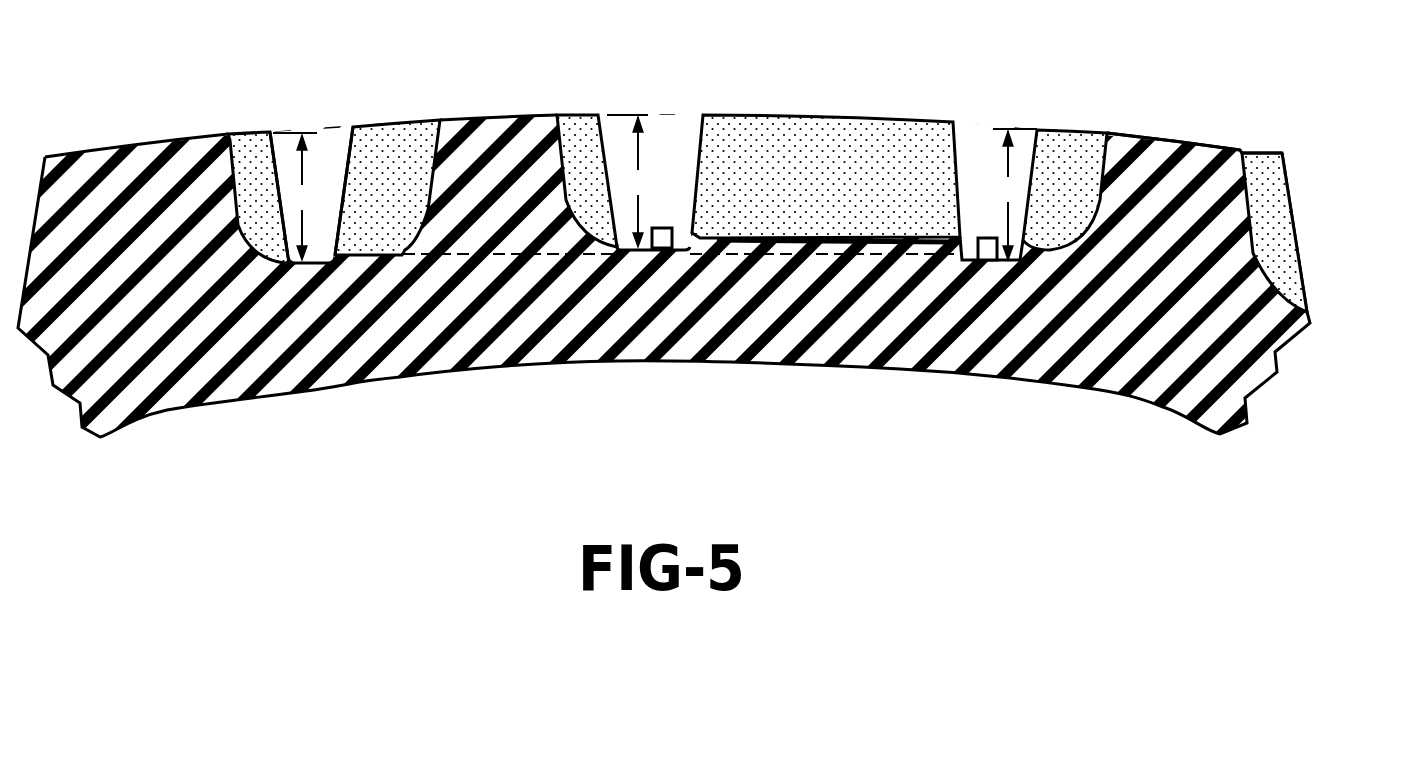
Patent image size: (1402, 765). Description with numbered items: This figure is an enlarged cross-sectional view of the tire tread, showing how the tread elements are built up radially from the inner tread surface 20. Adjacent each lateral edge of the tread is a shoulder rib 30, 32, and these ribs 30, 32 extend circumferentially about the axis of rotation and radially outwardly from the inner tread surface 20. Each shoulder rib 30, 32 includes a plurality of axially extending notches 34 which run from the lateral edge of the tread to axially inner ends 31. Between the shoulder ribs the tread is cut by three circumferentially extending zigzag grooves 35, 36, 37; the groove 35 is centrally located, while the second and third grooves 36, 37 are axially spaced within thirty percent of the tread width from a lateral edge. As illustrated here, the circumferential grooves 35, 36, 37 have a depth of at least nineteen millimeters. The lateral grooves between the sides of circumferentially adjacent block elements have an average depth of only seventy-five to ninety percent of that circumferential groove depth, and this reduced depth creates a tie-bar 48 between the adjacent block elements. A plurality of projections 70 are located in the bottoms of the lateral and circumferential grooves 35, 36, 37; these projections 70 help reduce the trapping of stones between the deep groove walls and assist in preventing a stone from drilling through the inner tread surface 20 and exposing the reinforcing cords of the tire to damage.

The inner tread surface 20 is at (331, 256).
The rib 30 is at (107, 147).
The axially inner end 31 is at (1243, 157).
The rib 32 is at (1180, 140).
The notch 34 is at (1270, 217).
The circumferentially extending zigzag groove 35 is at (667, 137).
The circumferentially extending zigzag groove 36 is at (984, 153).
The circumferentially extending zigzag groove 37 is at (327, 133).
The tie-bar 48 is at (798, 233).
The projection 70 is at (667, 226).